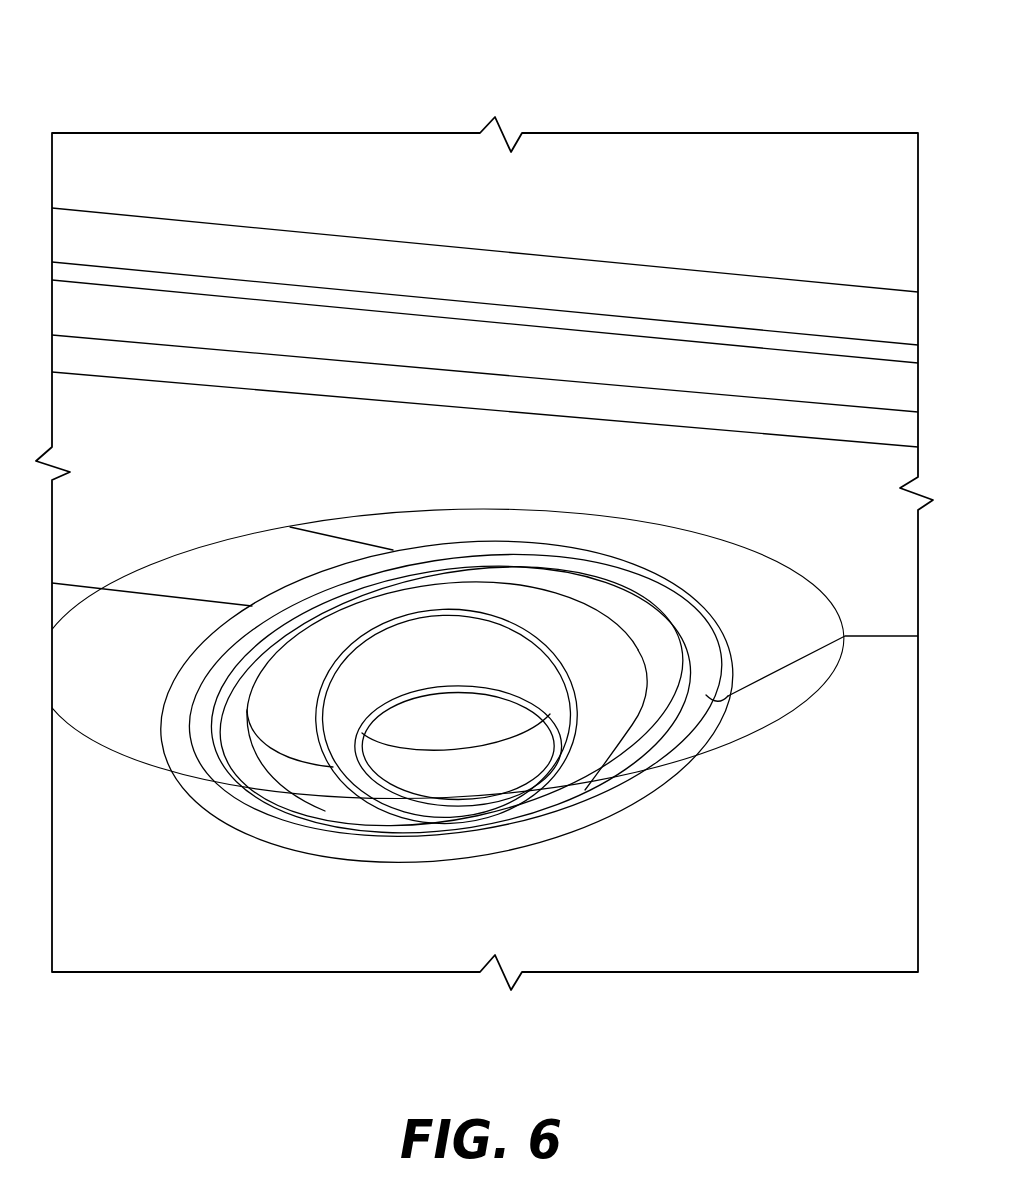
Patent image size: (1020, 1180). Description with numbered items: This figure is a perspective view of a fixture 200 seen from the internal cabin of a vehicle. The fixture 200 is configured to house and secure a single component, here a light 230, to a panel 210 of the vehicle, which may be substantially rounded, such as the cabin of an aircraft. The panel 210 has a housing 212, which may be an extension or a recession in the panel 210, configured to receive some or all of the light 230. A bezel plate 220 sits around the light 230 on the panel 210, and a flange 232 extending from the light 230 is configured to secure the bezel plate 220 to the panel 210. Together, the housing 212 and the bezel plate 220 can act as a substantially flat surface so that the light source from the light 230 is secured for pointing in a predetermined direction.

The fixture 200 is at (83, 74).
The panel 210 is at (798, 483).
The housing 212 is at (750, 610).
The bezel plate 220 is at (194, 697).
The light 230 is at (450, 720).
The flange 232 is at (662, 692).